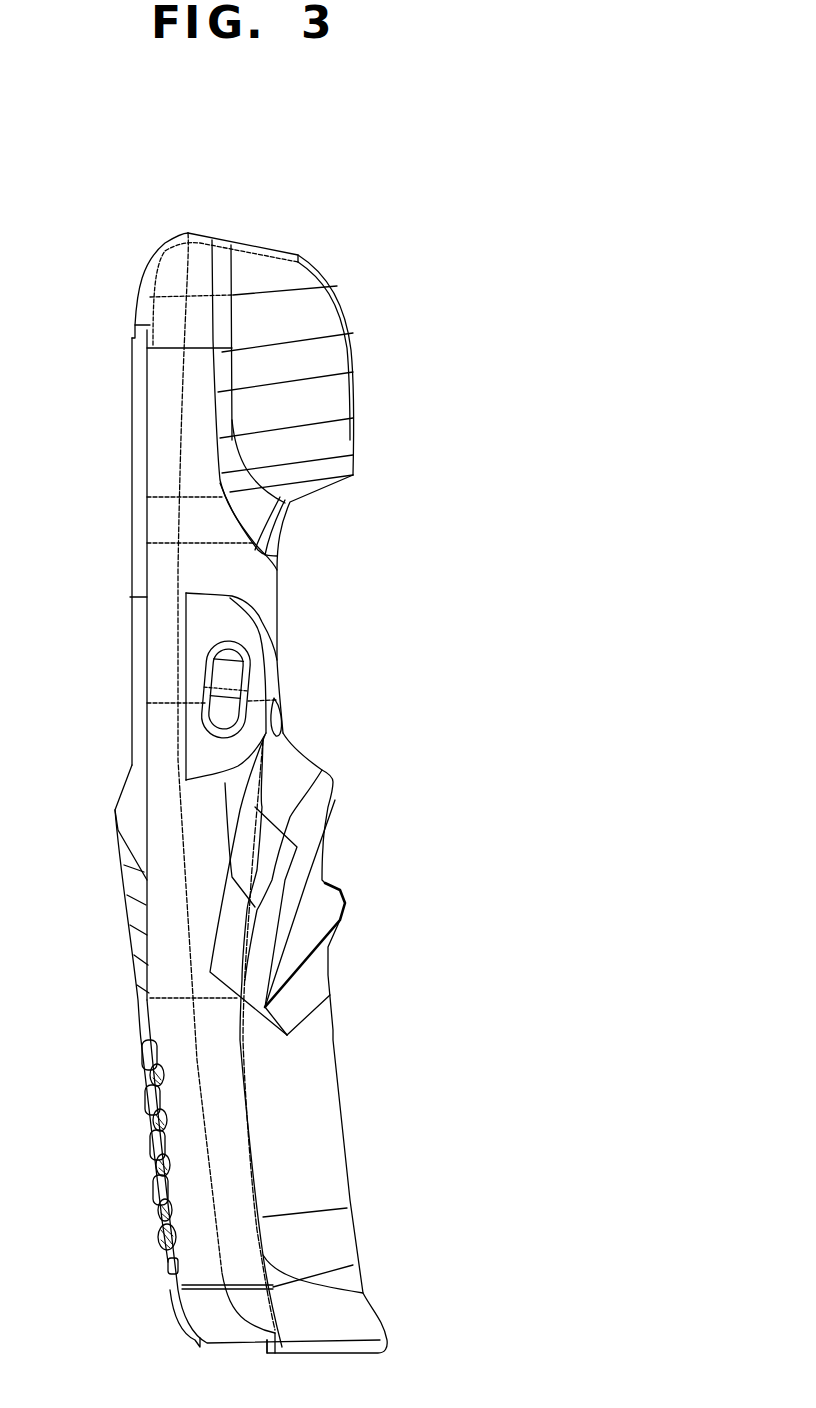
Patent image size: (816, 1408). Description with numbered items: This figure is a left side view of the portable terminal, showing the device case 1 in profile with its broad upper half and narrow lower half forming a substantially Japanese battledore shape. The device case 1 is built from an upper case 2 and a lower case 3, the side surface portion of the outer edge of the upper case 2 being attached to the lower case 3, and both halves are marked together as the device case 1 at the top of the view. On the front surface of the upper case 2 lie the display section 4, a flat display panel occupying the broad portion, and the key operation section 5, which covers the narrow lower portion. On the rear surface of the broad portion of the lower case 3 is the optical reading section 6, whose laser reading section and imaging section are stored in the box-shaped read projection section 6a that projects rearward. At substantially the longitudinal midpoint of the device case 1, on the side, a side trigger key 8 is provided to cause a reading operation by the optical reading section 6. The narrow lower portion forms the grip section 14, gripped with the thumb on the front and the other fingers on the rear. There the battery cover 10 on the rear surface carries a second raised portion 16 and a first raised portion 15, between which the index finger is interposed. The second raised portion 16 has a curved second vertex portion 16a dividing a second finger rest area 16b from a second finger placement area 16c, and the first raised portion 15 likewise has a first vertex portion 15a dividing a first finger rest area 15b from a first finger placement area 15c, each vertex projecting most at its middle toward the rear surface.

The device case 1 is at (230, 165).
The upper case 2 is at (140, 283).
The lower case 3 is at (200, 260).
The display section 4 is at (128, 518).
The key operation section 5 is at (143, 1097).
The optical reading section 6 is at (338, 286).
The read projection section 6a is at (338, 350).
The side trigger key 8 is at (223, 672).
The battery cover 10 is at (343, 1165).
The grip section 14 is at (210, 1147).
The first raised portion 15 is at (355, 892).
The first vertex portion 15a is at (330, 910).
The first finger rest area 15b is at (330, 900).
The first finger placement area 15c is at (333, 1028).
The second raised portion 16 is at (335, 766).
The second vertex portion 16a is at (320, 795).
The second finger rest area 16b is at (290, 764).
The second finger placement area 16c is at (317, 850).